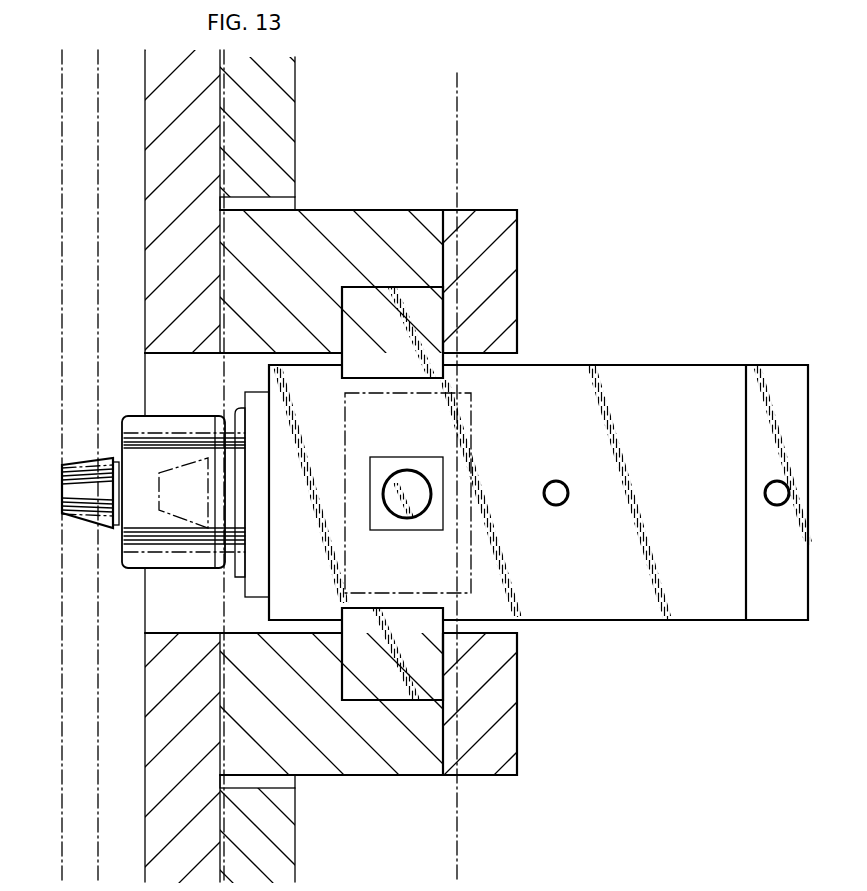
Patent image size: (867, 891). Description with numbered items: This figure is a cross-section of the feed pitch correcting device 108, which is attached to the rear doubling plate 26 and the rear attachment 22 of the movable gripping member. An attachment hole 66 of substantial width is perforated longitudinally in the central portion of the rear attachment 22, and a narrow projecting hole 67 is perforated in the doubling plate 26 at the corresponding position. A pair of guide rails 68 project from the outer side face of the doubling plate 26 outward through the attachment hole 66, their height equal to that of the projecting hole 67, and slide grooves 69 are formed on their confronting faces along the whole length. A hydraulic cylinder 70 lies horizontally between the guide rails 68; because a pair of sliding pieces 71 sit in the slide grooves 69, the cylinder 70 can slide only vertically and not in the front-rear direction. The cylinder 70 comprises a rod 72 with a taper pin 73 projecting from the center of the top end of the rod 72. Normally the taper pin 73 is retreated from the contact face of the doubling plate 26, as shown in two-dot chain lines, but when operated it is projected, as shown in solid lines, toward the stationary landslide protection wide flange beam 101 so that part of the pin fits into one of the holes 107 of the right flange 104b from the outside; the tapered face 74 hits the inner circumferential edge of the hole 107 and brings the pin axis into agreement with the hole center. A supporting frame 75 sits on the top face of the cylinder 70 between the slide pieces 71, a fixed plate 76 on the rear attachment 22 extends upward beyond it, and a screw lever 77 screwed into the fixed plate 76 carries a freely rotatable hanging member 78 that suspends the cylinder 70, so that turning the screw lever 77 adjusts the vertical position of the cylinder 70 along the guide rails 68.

The landslide protection wide flange beam 101 is at (61, 111).
The right flange 104b is at (75, 246).
The doubling plate 26 is at (147, 122).
The rear attachment 22 is at (289, 114).
The fixed plate 76 is at (460, 121).
The attachment hole 66 is at (279, 202).
The guide rails 68 is at (433, 216).
The slide grooves 69 is at (372, 292).
The sliding pieces 71 is at (346, 325).
The projecting hole 67 is at (152, 354).
The hydraulic cylinder 70 is at (604, 380).
The feed pitch correcting device 108 is at (709, 353).
The holes 107 is at (62, 466).
The taper pin 73 is at (88, 468).
The tapered face 74 is at (80, 517).
The rod 72 is at (218, 565).
The supporting frame 75 is at (474, 460).
The hanging member 78 is at (390, 456).
The screw lever 77 is at (416, 470).